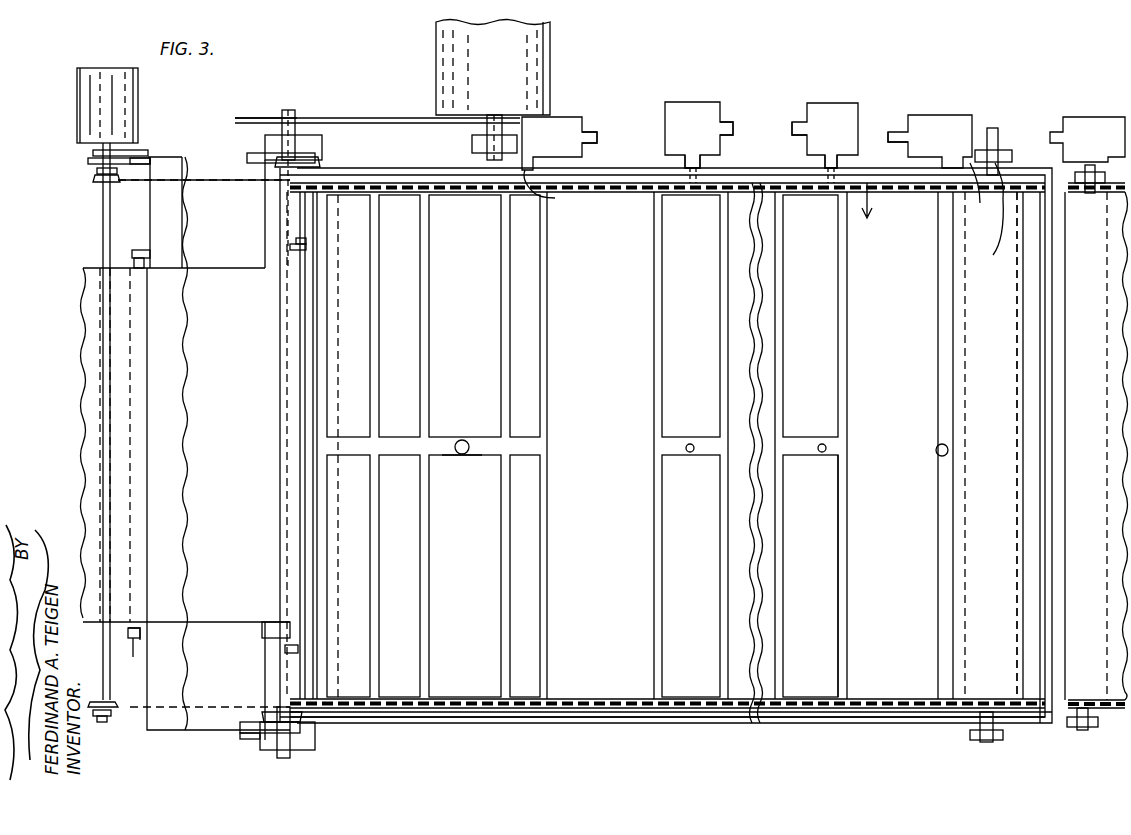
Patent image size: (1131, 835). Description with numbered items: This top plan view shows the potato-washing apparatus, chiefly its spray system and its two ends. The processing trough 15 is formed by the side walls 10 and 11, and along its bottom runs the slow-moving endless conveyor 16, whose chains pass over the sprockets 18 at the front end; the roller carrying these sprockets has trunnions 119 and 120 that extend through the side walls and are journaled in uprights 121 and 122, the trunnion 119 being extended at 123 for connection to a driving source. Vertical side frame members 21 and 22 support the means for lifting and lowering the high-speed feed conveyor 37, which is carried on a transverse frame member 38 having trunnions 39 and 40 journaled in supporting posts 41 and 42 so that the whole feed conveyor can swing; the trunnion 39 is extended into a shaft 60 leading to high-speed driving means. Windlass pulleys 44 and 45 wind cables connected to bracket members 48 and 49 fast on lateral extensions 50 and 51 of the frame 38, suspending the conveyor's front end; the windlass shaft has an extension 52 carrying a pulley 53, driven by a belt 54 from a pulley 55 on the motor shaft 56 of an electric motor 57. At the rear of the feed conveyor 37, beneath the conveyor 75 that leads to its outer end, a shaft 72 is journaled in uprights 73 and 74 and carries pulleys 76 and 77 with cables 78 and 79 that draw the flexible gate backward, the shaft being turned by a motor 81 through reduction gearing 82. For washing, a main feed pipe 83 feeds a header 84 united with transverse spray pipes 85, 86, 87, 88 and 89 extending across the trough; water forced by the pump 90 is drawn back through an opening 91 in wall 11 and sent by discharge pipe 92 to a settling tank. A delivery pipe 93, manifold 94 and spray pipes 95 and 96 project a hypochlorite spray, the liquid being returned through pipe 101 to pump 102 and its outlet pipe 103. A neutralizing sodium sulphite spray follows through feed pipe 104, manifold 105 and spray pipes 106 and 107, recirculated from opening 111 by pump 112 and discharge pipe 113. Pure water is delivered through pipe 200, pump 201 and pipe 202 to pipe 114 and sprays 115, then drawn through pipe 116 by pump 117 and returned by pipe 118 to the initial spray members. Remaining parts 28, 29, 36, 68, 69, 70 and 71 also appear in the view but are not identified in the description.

The side wall 10 is at (608, 172).
The side wall 11 is at (662, 716).
The trough member 15 is at (876, 176).
The endless conveyor 16 is at (590, 698).
The sprockets 18 is at (980, 244).
The side frame member 21 is at (322, 148).
The side frame member 22 is at (315, 746).
The frame end member 28 is at (1033, 690).
The drum bolt 29 is at (1048, 712).
The conveyor chain 36 is at (592, 715).
The feed conveyor 37 is at (218, 450).
The transverse frame member 38 is at (150, 206).
The pivoting trunnion 39 is at (127, 630).
The pivoting trunnion 40 is at (135, 250).
The supporting post 41 is at (132, 637).
The supporting post 42 is at (134, 254).
The windlass pulley 44 is at (262, 722).
The windlass pulley 45 is at (271, 166).
The bracket member 48 is at (248, 152).
The bracket member 49 is at (244, 740).
The lateral extension 50 is at (214, 720).
The lateral extension 51 is at (202, 161).
The shaft extension 52 is at (286, 126).
The pulley 53 is at (300, 110).
The drive belt 54 is at (398, 116).
The pulley 55 is at (494, 118).
The motor shaft 56 is at (480, 158).
The electric motor 57 is at (548, 43).
The shaft 60 is at (134, 654).
The lower clamp 68 is at (290, 628).
The clamp plate 69 is at (306, 248).
The clamp block 70 is at (298, 650).
The set screw 71 is at (306, 240).
The shaft 72 is at (102, 224).
The upright 73 is at (106, 724).
The upright 74 is at (92, 155).
The conveyor 75 is at (82, 382).
The pulley 76 is at (88, 709).
The pulley 77 is at (96, 173).
The cable 78 is at (129, 714).
The cable 79 is at (140, 172).
The motor 81 is at (140, 90).
The reduction gearing 82 is at (140, 158).
The main feed pipe 83 is at (462, 440).
The header 84 is at (442, 455).
The transverse pipe 85 is at (428, 350).
The transverse pipe 86 is at (498, 312).
The transverse pipe 87 is at (378, 256).
The transverse pipe 88 is at (528, 282).
The transverse pipe 89 is at (330, 338).
The pump 90 is at (560, 110).
The opening 91 is at (558, 198).
The discharge pipe 92 is at (590, 132).
The delivery pipe 93 is at (690, 444).
The manifold 94 is at (703, 456).
The spray pipe 95 is at (720, 322).
The spray pipe 96 is at (654, 368).
The pipe 101 is at (705, 164).
The pump 102 is at (688, 103).
The outlet pipe 103 is at (730, 128).
The feed pipe 104 is at (820, 444).
The manifold 105 is at (806, 456).
The spray pipe 106 is at (840, 568).
The spray pipe 107 is at (784, 323).
The opening 111 is at (820, 163).
The pump 112 is at (845, 104).
The discharge pipe 113 is at (796, 128).
The pipe 114 is at (936, 451).
The sprays 115 is at (938, 328).
The pipe 116 is at (990, 194).
The pump 117 is at (940, 114).
The pipe 118 is at (893, 136).
The trunnion 119 is at (1006, 218).
The trunnion 120 is at (980, 728).
The upright 121 is at (1008, 150).
The upright 122 is at (975, 738).
The trunnion extension 123 is at (992, 128).
The pipe 200 is at (1100, 196).
The pump 201 is at (1083, 130).
The pipe 202 is at (1087, 172).